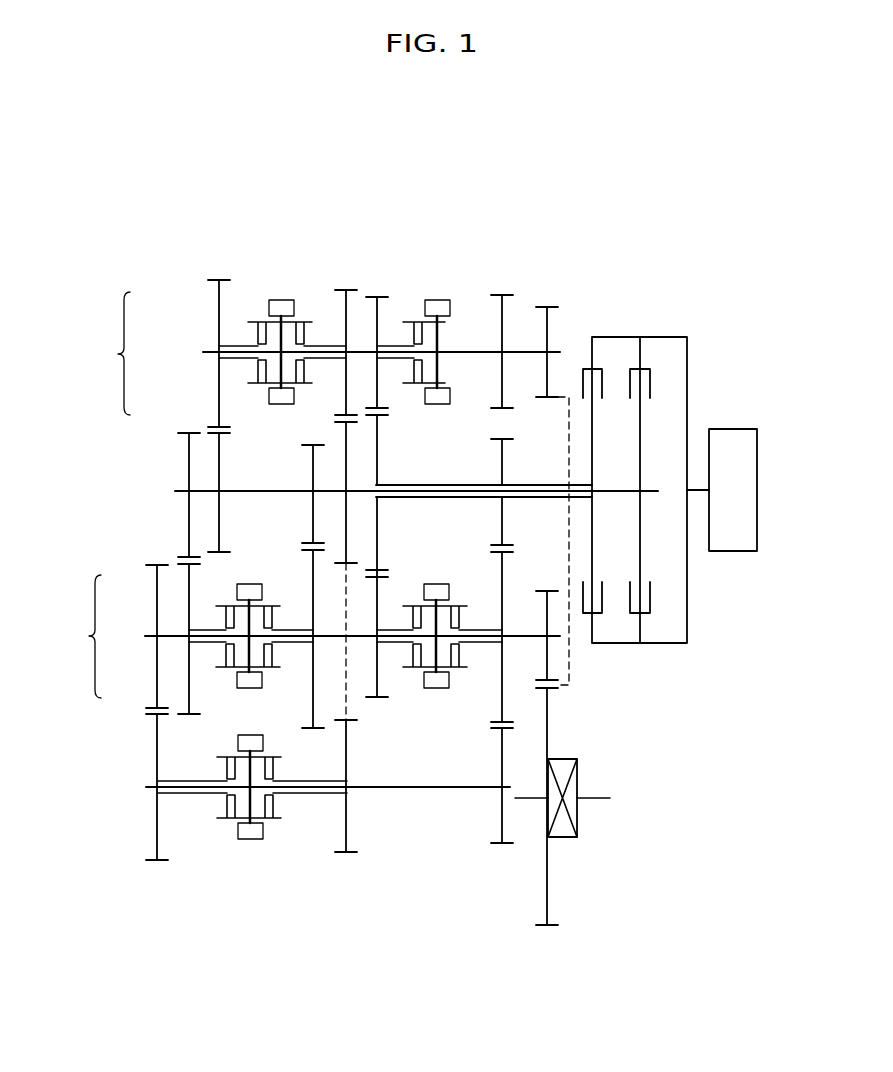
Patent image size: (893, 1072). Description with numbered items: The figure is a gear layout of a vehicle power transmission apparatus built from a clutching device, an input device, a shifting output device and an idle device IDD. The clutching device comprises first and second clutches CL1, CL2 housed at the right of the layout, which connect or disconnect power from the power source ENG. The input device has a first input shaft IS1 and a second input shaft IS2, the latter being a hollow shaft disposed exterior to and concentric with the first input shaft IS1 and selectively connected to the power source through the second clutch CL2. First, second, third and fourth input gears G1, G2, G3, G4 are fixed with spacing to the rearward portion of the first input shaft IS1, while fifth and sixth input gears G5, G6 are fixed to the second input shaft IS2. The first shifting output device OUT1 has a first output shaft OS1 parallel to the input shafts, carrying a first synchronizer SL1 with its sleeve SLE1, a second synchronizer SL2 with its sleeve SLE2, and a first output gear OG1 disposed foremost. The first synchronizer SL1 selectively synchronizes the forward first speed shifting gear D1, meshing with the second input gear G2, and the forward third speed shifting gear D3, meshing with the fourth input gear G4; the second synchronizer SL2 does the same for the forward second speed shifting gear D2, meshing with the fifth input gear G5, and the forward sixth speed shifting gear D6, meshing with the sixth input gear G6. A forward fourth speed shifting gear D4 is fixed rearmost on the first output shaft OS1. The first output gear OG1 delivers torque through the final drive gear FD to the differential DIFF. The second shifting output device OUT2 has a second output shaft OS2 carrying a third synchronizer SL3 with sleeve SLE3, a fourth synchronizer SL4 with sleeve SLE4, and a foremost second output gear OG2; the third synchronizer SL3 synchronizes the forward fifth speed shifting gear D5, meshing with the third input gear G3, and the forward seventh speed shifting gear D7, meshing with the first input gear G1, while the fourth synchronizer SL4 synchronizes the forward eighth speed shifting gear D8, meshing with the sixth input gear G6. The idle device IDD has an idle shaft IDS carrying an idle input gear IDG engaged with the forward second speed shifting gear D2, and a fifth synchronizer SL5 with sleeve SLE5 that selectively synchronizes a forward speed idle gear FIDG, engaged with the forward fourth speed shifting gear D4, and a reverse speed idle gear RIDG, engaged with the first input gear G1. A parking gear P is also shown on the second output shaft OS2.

The second shifting output device OUT2 is at (314, 304).
The second output shaft OS2 is at (208, 352).
The forward fifth speed shifting gear D5 is at (218, 312).
The forward seventh speed shifting gear D7 is at (347, 297).
The forward eighth speed shifting gear D8 is at (378, 308).
The parking gear P is at (512, 306).
The third synchronizer SL3 is at (282, 314).
The sleeve SLE3 is at (281, 300).
The fourth synchronizer SL4 is at (434, 292).
The sleeve SLE4 is at (434, 330).
The first input shaft IS1 is at (257, 492).
The second input shaft IS2 is at (435, 497).
The first input gear G1 is at (346, 432).
The second input gear G2 is at (313, 471).
The third input gear G3 is at (219, 448).
The fourth input gear G4 is at (189, 447).
The fifth input gear G5 is at (502, 458).
The sixth input gear G6 is at (378, 431).
The first shifting output device OUT1 is at (300, 626).
The first output shaft OS1 is at (150, 636).
The forward first speed shifting gear D1 is at (313, 569).
The forward second speed shifting gear D2 is at (501, 568).
The forward third speed shifting gear D3 is at (189, 570).
The forward fourth speed shifting gear D4 is at (157, 680).
The forward sixth speed shifting gear D6 is at (378, 588).
The first synchronizer SL1 is at (241, 670).
The sleeve SLE1 is at (250, 690).
The second synchronizer SL2 is at (430, 670).
The sleeve SLE2 is at (437, 690).
The first output gear OG1 is at (547, 598).
The second output gear OG2 is at (555, 318).
The final drive gear FD is at (550, 718).
The differential DIFF is at (580, 778).
The idle device IDD is at (300, 838).
The idle shaft IDS is at (420, 788).
The forward speed idle gear FIDG is at (158, 830).
The reverse speed idle gear RIDG is at (347, 830).
The idle input gear IDG is at (502, 826).
The fifth synchronizer SL5 is at (252, 831).
The sleeve SLE5 is at (249, 838).
The first clutch CL1 is at (658, 358).
The second clutch CL2 is at (610, 358).
The power source ENG is at (722, 490).